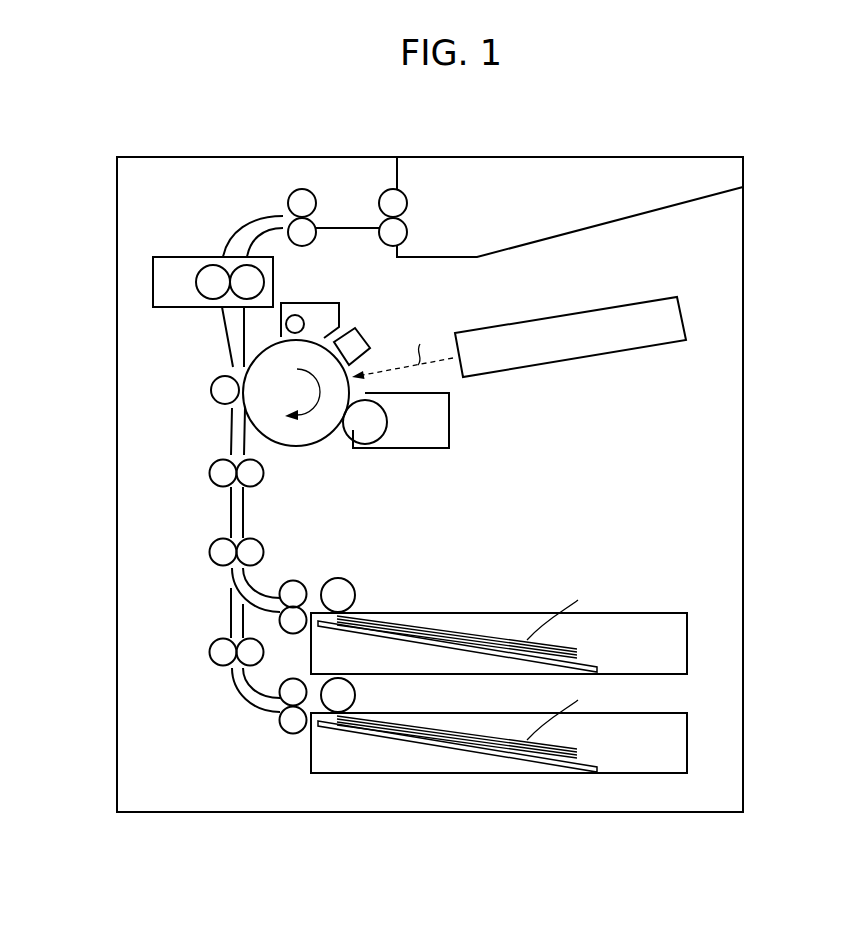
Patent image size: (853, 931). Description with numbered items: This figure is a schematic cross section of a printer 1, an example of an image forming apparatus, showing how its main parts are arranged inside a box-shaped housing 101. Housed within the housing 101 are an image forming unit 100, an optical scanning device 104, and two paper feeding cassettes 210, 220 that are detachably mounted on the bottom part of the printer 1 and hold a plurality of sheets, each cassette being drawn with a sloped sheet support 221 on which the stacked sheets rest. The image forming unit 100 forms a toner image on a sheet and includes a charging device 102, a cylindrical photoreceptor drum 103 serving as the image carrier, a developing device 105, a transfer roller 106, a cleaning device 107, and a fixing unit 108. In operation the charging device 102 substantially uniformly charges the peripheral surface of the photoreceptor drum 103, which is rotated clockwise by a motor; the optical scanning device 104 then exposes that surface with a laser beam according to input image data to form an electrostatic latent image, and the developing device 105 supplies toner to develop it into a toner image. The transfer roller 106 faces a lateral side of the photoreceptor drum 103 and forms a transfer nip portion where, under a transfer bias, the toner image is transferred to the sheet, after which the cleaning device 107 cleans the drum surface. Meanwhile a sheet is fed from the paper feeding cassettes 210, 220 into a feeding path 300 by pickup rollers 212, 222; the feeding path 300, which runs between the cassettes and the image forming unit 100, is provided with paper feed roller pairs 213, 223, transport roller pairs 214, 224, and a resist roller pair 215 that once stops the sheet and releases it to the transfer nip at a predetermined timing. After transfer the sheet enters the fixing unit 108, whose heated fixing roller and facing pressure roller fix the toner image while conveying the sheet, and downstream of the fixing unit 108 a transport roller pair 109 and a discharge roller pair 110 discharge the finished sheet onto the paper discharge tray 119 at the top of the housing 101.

The printer 1 is at (690, 122).
The image forming unit 100 is at (448, 308).
The housing 101 is at (743, 262).
The charging device 102 is at (365, 338).
The photoreceptor drum 103 is at (257, 355).
The optical scanning device 104 is at (607, 356).
The developing device 105 is at (410, 448).
The transfer roller 106 is at (210, 388).
The cleaning device 107 is at (310, 303).
The fixing unit 108 is at (153, 275).
The transport roller pair 109 is at (300, 189).
The discharge roller pair 110 is at (404, 190).
The paper discharge tray 119 is at (575, 228).
The paper feeding cassette 210 is at (650, 612).
The pickup roller 212 is at (345, 580).
The paper feed roller pair 213 is at (300, 582).
The transport roller pair 214 is at (210, 552).
The resist roller pair 215 is at (210, 473).
The paper feeding cassette 220 is at (628, 712).
The sheet stacking plate 221 is at (443, 747).
The pickup roller 222 is at (355, 692).
The paper feed roller pair 223 is at (293, 733).
The transport roller pair 224 is at (210, 652).
The feeding path 300 is at (275, 560).